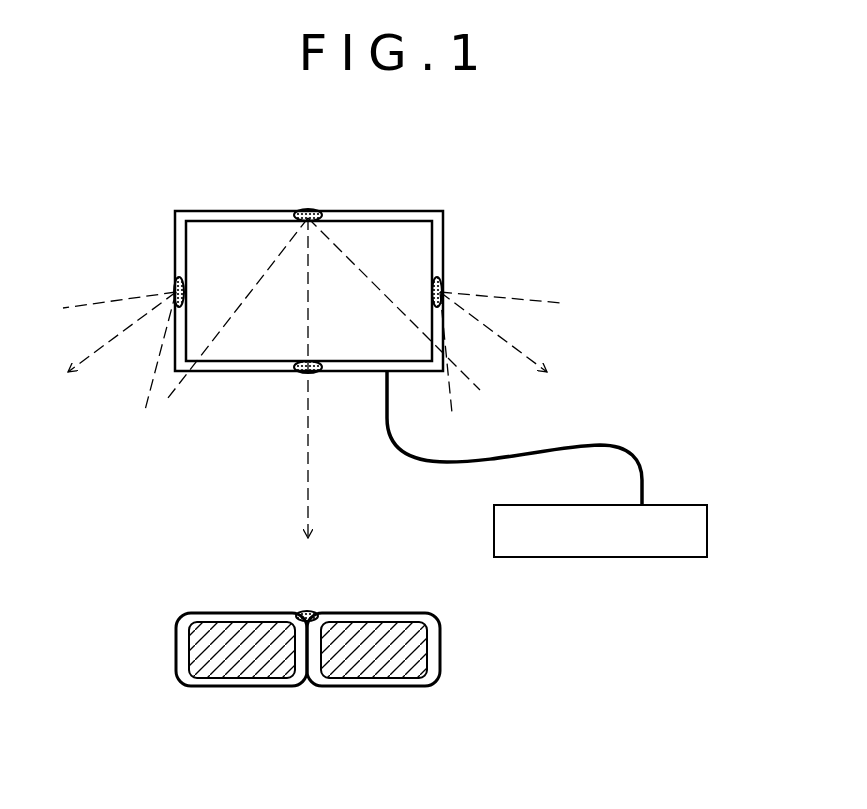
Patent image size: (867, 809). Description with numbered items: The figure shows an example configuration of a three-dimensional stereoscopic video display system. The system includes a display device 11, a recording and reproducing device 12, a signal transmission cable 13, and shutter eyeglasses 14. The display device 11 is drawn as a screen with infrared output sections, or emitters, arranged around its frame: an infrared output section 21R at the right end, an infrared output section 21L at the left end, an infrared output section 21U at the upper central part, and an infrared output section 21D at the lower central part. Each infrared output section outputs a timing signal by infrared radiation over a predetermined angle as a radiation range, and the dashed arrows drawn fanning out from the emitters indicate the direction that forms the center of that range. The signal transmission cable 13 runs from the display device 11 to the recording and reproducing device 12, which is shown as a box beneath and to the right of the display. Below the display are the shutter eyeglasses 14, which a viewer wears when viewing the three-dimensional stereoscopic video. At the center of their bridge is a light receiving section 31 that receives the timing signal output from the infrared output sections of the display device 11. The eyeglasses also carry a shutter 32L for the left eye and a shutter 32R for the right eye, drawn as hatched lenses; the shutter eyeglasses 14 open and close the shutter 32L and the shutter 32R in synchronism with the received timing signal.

The display device 11 is at (403, 211).
The recording and reproducing device 12 is at (707, 530).
The signal transmission cable 13 is at (600, 445).
The shutter eyeglasses 14 is at (440, 652).
The infrared output section 21U is at (306, 208).
The infrared output section 21D is at (318, 374).
The infrared output section 21L is at (174, 284).
The infrared output section 21R is at (443, 284).
The light receiving section 31 is at (307, 611).
The shutter for the right eye 32R is at (240, 665).
The shutter for the left eye 32L is at (373, 665).